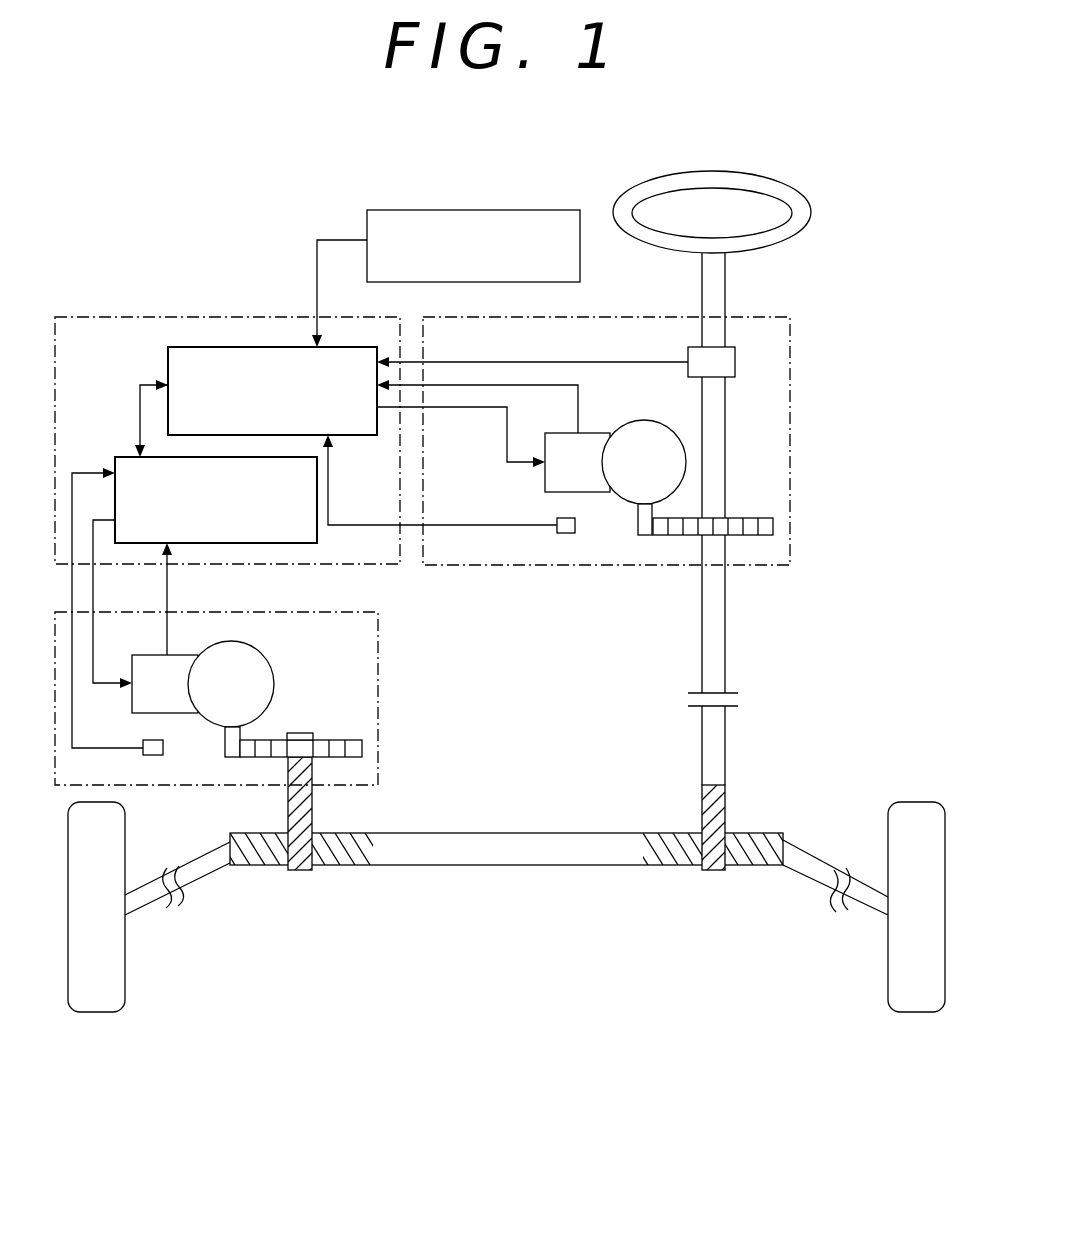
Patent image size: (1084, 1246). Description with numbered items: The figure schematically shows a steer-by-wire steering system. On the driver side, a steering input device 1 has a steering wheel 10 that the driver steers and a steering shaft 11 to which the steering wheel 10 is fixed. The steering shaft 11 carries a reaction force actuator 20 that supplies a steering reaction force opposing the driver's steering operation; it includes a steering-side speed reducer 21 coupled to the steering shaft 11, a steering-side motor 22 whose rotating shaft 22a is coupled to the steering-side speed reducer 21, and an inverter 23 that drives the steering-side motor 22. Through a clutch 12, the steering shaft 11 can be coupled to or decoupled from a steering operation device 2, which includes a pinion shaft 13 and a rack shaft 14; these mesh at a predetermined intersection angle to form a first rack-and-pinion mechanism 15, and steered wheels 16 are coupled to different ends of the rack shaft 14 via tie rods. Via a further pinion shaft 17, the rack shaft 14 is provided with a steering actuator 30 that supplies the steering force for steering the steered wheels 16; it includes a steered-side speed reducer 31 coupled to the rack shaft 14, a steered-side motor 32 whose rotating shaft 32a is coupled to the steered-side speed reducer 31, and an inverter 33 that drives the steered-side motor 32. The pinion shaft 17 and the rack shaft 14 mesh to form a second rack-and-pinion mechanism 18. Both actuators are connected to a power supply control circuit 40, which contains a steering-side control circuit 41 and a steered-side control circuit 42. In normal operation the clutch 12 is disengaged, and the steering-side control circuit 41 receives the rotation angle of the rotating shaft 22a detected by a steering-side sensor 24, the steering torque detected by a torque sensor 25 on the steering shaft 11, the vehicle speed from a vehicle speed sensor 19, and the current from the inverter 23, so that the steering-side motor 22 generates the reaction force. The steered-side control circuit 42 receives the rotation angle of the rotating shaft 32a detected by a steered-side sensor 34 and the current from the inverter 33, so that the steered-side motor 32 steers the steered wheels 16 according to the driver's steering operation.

The steering input device 1 is at (884, 356).
The steering operation device 2 is at (436, 951).
The steering wheel 10 is at (810, 194).
The steering shaft 11 is at (725, 284).
The clutch 12 is at (728, 690).
The pinion shaft 13 is at (725, 744).
The rack shaft 14 is at (501, 833).
The first rack-and-pinion mechanism 15 is at (708, 890).
The steered wheels 16 is at (93, 1012).
The pinion shaft 17 is at (313, 795).
The second rack-and-pinion mechanism 18 is at (302, 890).
The vehicle speed sensor 19 is at (470, 210).
The reaction force actuator 20 is at (790, 418).
The steering-side speed reducer 21 is at (755, 518).
The steering-side motor 22 is at (648, 420).
The rotating shaft 22a is at (645, 535).
The inverter 23 is at (590, 492).
The steering-side sensor 24 is at (557, 533).
The torque sensor 25 is at (735, 362).
The steering actuator 30 is at (378, 680).
The steered-side speed reducer 31 is at (343, 740).
The steered-side motor 32 is at (250, 645).
The rotating shaft 32a is at (232, 757).
The inverter 33 is at (175, 713).
The steered-side sensor 34 is at (153, 755).
The power supply control circuit 40 is at (112, 317).
The steering-side control circuit 41 is at (170, 347).
The steered-side control circuit 42 is at (118, 457).